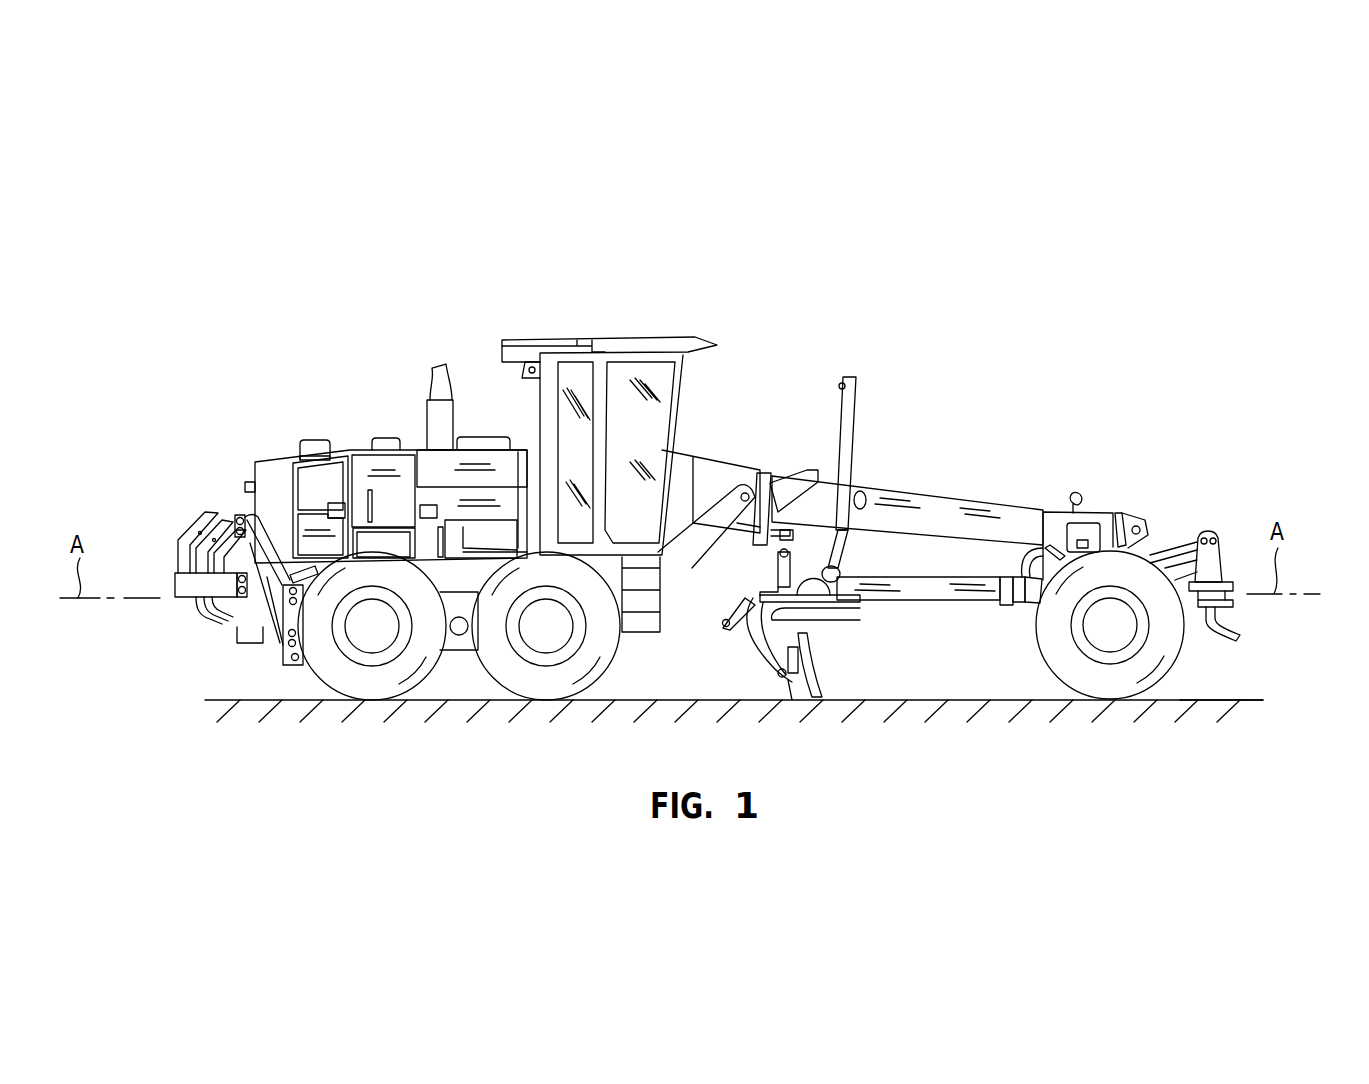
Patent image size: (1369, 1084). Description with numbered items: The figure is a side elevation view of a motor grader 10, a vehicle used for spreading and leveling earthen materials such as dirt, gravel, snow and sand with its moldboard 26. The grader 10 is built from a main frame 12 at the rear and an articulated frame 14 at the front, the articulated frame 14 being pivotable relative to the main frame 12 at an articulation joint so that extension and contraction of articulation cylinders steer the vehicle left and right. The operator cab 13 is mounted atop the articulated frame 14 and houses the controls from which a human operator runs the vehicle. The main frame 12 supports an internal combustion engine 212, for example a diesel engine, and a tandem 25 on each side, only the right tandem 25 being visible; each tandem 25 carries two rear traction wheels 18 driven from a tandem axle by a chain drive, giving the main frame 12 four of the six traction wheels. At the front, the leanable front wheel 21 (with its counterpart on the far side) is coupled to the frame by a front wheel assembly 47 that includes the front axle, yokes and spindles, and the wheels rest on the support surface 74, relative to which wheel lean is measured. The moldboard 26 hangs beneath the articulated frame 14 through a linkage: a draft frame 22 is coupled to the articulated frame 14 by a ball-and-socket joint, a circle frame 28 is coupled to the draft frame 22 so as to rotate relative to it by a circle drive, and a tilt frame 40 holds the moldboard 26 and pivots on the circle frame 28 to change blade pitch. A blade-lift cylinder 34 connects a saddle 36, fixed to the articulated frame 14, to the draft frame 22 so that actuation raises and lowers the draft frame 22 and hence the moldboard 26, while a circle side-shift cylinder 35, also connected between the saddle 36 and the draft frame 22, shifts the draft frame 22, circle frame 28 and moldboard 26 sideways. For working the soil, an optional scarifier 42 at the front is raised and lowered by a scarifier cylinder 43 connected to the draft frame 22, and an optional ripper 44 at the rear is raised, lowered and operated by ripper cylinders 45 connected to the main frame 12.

The motor grader 10 is at (1010, 260).
The main frame 12 is at (477, 390).
The operator cab 13 is at (665, 308).
The articulated frame 14 is at (996, 447).
The rear traction wheels 18 is at (330, 676).
The front traction wheel 21 is at (1072, 674).
The draft frame 22 is at (912, 596).
The tandem 25 is at (442, 698).
The moldboard 26 is at (828, 654).
The circle frame 28 is at (765, 645).
The blade-lift cylinder 34 is at (850, 432).
The circle side-shift cylinder 35 is at (787, 567).
The saddle 36 is at (816, 472).
The tilt frame 40 is at (797, 692).
The scarifier 42 is at (1178, 512).
The scarifier cylinder 43 is at (1147, 540).
The ripper 44 is at (209, 492).
The ripper cylinders 45 is at (267, 583).
The front wheel assembly 47 is at (1121, 436).
The support surface 74 is at (1225, 700).
The engine 212 is at (343, 396).